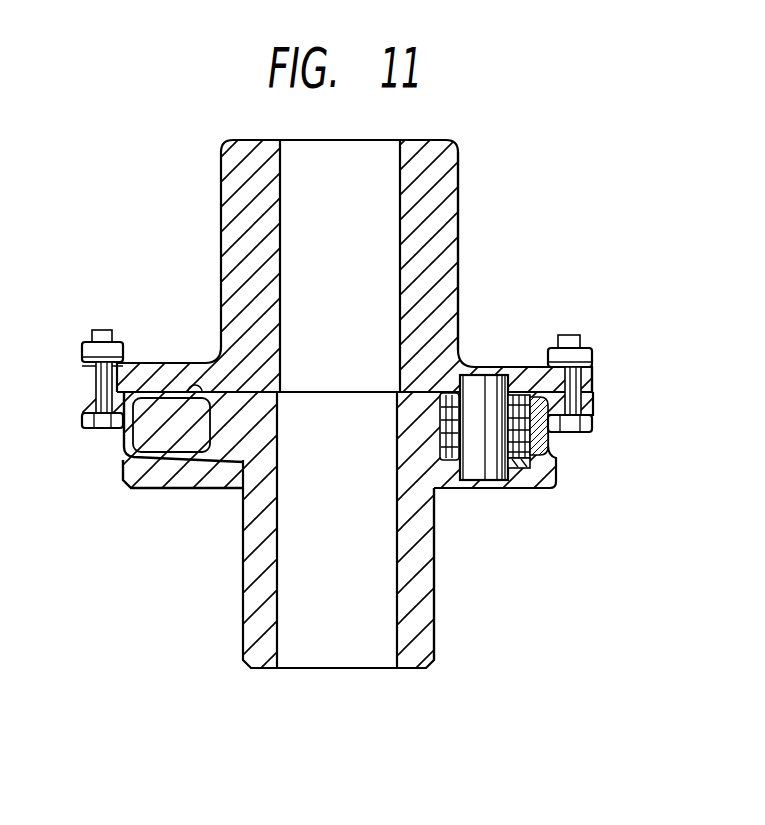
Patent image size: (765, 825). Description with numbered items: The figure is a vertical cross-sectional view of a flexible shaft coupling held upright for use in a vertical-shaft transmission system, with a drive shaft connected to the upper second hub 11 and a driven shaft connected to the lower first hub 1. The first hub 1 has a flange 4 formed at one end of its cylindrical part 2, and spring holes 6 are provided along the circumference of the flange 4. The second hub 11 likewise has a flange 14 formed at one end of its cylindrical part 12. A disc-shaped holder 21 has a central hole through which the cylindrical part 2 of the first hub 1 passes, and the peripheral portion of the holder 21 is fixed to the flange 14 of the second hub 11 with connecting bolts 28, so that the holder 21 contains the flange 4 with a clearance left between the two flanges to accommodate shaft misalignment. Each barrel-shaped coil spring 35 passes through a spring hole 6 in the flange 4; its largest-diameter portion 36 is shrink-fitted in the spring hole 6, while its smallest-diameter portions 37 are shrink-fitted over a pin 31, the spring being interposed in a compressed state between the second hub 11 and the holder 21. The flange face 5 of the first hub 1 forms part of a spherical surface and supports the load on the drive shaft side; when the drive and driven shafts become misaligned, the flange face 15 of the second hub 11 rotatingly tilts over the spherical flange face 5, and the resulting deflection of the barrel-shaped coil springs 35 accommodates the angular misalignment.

The first hub 1 is at (439, 580).
The cylindrical part 2 is at (431, 638).
The flange 4 is at (193, 433).
The flange face 5 is at (208, 456).
The spring holes 6 is at (447, 462).
The second hub 11 is at (461, 217).
The cylindrical part 12 is at (447, 183).
The flange 14 is at (525, 373).
The flange face 15 is at (161, 400).
The holder 21 is at (556, 470).
The connecting bolts 28 is at (573, 379).
The pin 31 is at (485, 380).
The barrel-shaped coil spring 35 is at (522, 470).
The largest-diameter portion 36 is at (550, 442).
The smallest-diameter portions 37 is at (520, 457).